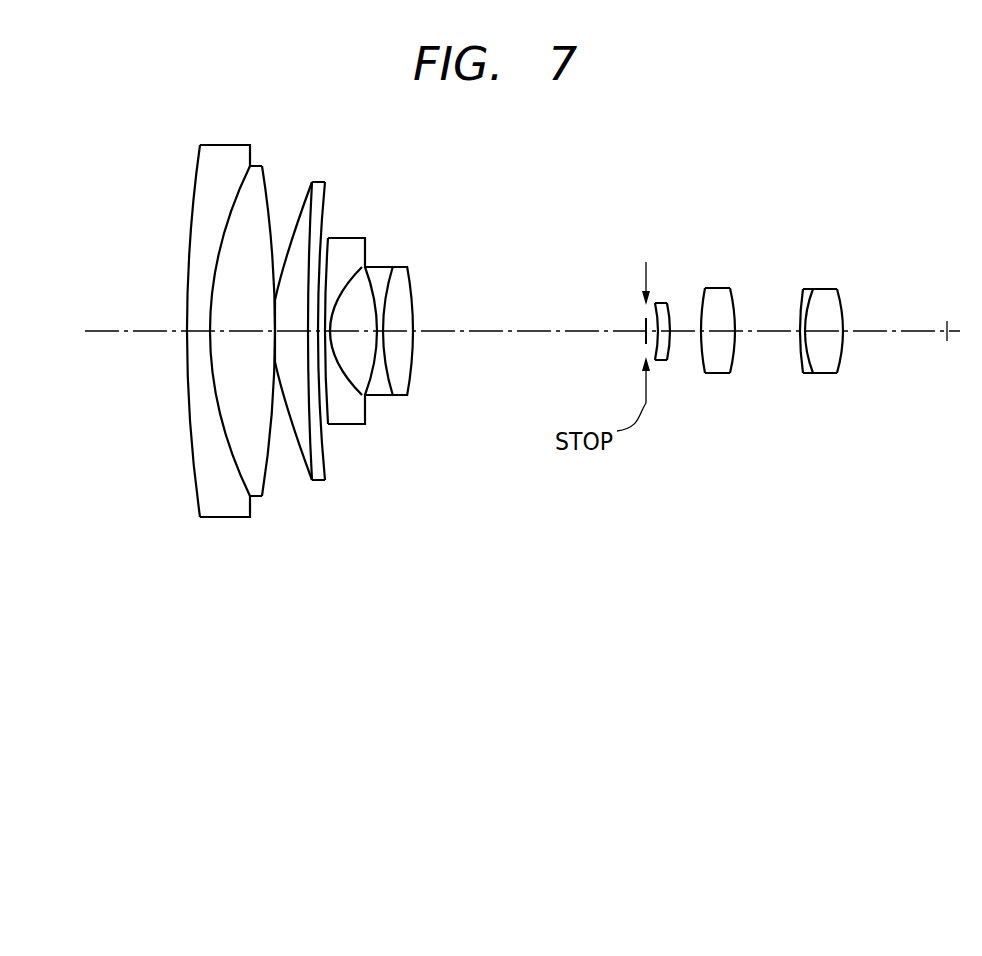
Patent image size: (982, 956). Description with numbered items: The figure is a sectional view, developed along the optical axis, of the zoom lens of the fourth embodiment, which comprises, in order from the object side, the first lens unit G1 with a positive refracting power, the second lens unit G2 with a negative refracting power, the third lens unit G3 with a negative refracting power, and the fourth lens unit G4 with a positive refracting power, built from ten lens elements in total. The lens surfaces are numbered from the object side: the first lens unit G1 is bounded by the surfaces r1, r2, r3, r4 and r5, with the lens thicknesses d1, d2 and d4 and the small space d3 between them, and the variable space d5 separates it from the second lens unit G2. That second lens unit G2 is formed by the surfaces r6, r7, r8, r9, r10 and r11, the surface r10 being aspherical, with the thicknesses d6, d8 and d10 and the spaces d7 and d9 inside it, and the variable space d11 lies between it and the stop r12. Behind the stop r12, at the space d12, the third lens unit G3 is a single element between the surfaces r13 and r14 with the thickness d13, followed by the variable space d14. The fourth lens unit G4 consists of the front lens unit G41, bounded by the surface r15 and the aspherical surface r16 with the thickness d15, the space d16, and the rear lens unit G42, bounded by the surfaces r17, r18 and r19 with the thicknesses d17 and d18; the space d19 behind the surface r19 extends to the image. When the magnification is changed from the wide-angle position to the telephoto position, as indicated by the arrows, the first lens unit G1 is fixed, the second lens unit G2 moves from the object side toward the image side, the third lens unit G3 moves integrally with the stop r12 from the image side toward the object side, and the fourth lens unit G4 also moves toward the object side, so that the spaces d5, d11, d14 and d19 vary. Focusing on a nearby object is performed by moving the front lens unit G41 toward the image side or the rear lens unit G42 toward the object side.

The first lens surface r1 is at (193, 185).
The second lens surface r2 is at (240, 202).
The third lens surface r3 is at (270, 160).
The fourth lens surface r4 is at (283, 222).
The fifth lens surface r5 is at (323, 185).
The sixth lens surface r6 is at (328, 250).
The seventh lens surface r7 is at (330, 288).
The eighth lens surface r8 is at (362, 263).
The ninth lens surface r9 is at (387, 290).
The tenth lens surface r10 is at (410, 287).
The eleventh lens surface r11 is at (415, 303).
The stop r12 is at (646, 262).
The thirteenth lens surface r13 is at (655, 300).
The fourteenth lens surface r14 is at (670, 302).
The fifteenth lens surface r15 is at (704, 288).
The sixteenth lens surface r16 is at (733, 292).
The seventeenth lens surface r17 is at (803, 290).
The eighteenth lens surface r18 is at (815, 289).
The nineteenth lens surface r19 is at (843, 293).
The lens thickness d1 is at (197, 334).
The lens thickness d2 is at (233, 333).
The air space d3 is at (234, 338).
The lens thickness d4 is at (293, 334).
The variable air space d5 is at (314, 334).
The lens thickness d6 is at (322, 335).
The air space d7 is at (328, 335).
The lens thickness d8 is at (357, 335).
The air space d9 is at (380, 335).
The lens thickness d10 is at (400, 335).
The variable air space d11 is at (520, 335).
The air space d12 is at (651, 345).
The lens thickness d13 is at (663, 342).
The variable air space d14 is at (682, 340).
The lens thickness d15 is at (718, 334).
The air space d16 is at (758, 334).
The lens thickness d17 is at (802, 334).
The lens thickness d18 is at (830, 334).
The variable back space d19 is at (897, 334).
The first lens unit G1 is at (241, 483).
The second lens unit G2 is at (409, 502).
The third lens unit G3 is at (611, 551).
The fourth lens unit G4 is at (754, 554).
The front lens unit of the fourth lens unit G41 is at (728, 434).
The rear lens unit of the fourth lens unit G42 is at (840, 438).